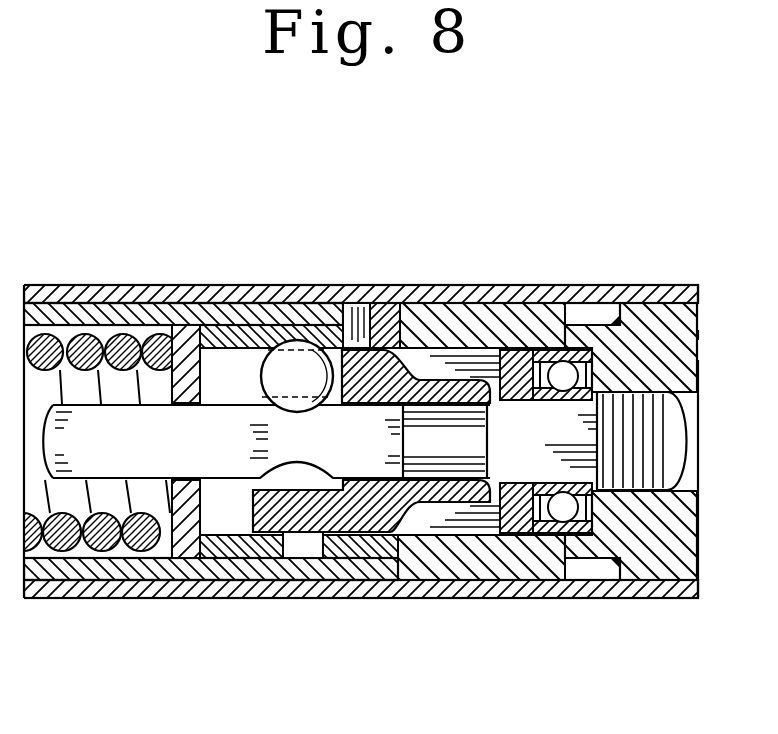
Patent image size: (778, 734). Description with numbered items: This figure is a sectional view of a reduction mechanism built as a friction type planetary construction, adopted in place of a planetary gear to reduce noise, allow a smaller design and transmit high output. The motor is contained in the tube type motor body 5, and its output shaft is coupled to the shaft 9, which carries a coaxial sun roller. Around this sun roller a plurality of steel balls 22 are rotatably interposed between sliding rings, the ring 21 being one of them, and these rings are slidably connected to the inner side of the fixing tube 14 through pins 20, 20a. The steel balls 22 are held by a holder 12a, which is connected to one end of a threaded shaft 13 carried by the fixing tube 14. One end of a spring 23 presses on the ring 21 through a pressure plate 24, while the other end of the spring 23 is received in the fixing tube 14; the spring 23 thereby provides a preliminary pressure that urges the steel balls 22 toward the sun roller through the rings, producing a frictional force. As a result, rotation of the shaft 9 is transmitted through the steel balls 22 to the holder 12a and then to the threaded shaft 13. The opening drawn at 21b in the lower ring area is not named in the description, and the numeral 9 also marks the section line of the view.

The tube type motor body 5 is at (481, 286).
The shaft 9 is at (297, 237).
The holder 12a is at (372, 512).
The threaded shaft 13 is at (648, 445).
The fixing tube 14 is at (647, 286).
The pin 20 is at (238, 286).
The pin 20a is at (372, 286).
The sliding ring 21 is at (196, 598).
The hole in lower retaining ring 21b is at (362, 548).
The steel balls 22 is at (300, 372).
The spring 23 is at (77, 286).
The pressure plate 24 is at (163, 286).